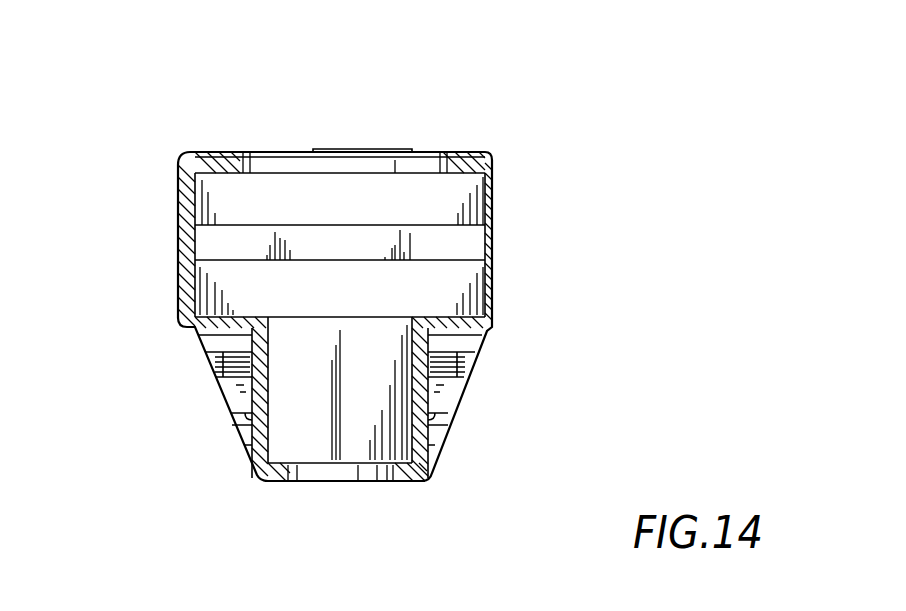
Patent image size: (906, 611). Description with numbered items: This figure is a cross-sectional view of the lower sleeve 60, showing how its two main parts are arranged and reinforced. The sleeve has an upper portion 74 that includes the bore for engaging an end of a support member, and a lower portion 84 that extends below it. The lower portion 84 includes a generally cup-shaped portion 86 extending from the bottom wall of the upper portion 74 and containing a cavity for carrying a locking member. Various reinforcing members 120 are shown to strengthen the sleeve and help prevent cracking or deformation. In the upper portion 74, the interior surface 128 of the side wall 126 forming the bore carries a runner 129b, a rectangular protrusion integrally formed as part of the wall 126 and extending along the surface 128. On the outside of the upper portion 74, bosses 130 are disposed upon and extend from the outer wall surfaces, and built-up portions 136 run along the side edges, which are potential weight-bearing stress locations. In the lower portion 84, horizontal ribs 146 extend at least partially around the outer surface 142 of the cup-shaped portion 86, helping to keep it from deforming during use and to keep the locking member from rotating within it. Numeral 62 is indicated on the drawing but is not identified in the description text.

The lower sleeve 60 is at (497, 52).
The cap 62 is at (180, 176).
The upper portion 74 is at (138, 238).
The lower portion 84 is at (188, 447).
The cup-shaped portion 86 is at (435, 473).
The reinforcing members 120 is at (342, 149).
The side wall 126 is at (425, 185).
The interior surface 128 is at (353, 214).
The runner 129b is at (478, 246).
The boss 130 is at (357, 150).
The built-up portion 136 is at (217, 150).
The outer surface 142 is at (250, 462).
The horizontal ribs 146 is at (223, 362).